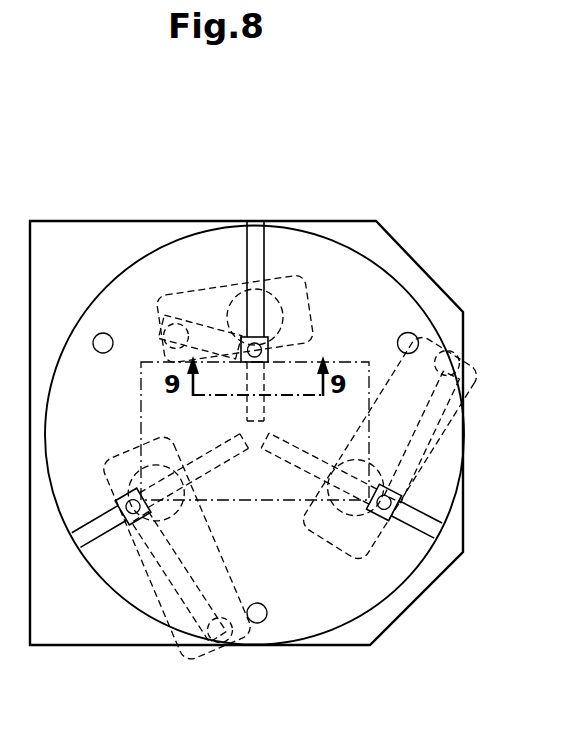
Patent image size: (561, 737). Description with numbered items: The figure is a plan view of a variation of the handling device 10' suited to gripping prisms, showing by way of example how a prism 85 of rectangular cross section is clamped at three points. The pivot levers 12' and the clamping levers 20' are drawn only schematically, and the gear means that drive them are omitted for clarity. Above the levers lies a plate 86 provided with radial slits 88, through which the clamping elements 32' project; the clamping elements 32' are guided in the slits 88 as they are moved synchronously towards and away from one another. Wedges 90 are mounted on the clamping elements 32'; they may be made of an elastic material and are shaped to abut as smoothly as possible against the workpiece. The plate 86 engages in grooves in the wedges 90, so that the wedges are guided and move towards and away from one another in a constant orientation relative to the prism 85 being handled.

The base plate 10' is at (246, 397).
The pivot lever 12' is at (277, 247).
The clamping lever 20' is at (235, 256).
The clamping element 32' is at (265, 319).
The prism 85 is at (281, 505).
The plate 86 is at (325, 255).
The radial slit 88 is at (255, 233).
The wedge 90 is at (303, 333).